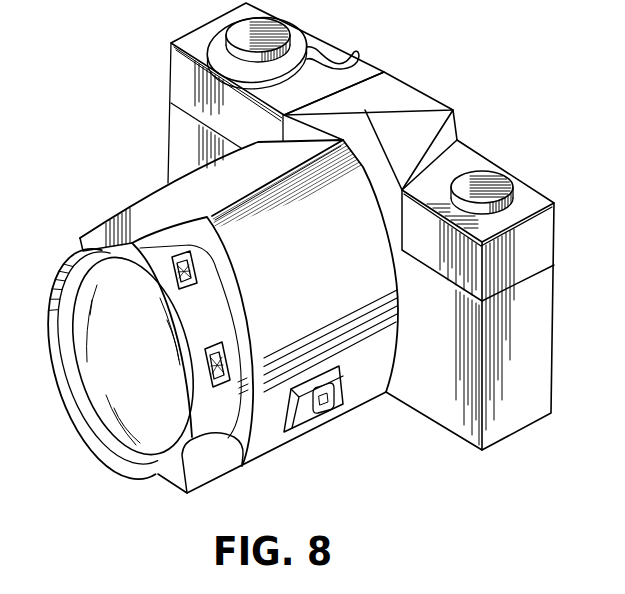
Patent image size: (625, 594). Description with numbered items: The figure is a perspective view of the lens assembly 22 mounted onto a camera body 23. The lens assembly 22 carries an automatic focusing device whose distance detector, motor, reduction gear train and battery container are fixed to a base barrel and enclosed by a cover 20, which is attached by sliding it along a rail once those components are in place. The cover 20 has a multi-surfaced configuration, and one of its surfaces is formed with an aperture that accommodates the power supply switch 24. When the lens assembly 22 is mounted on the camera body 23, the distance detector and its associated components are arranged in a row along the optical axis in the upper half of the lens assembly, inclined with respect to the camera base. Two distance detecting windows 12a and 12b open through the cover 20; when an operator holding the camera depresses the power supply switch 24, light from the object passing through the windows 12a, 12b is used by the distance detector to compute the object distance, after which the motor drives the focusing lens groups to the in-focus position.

The distance detecting window 12a is at (183, 262).
The distance detecting window 12b is at (215, 358).
The cover 20 is at (391, 302).
The lens assembly 22 is at (255, 455).
The camera body 23 is at (470, 157).
The power supply switch 24 is at (323, 407).